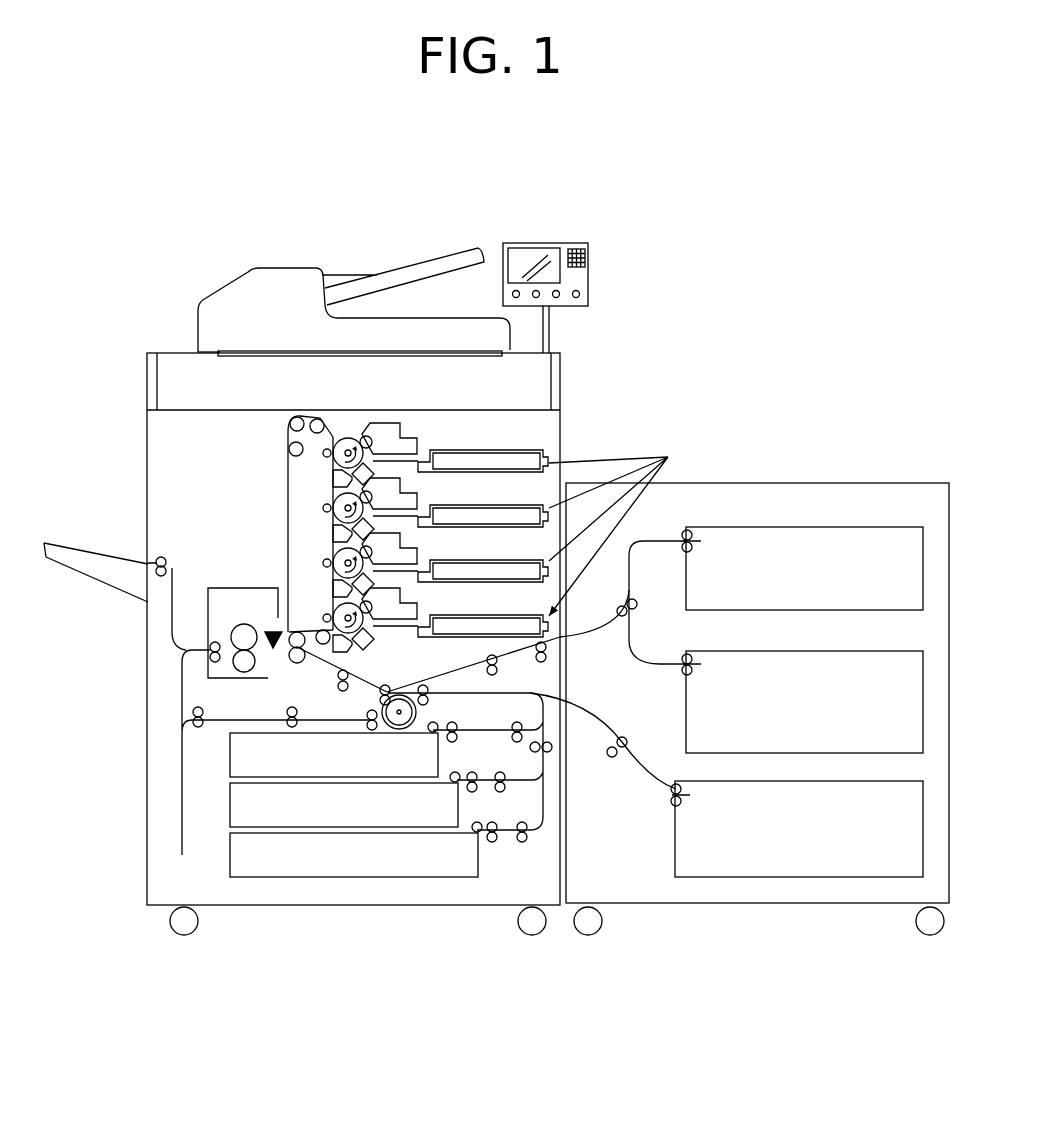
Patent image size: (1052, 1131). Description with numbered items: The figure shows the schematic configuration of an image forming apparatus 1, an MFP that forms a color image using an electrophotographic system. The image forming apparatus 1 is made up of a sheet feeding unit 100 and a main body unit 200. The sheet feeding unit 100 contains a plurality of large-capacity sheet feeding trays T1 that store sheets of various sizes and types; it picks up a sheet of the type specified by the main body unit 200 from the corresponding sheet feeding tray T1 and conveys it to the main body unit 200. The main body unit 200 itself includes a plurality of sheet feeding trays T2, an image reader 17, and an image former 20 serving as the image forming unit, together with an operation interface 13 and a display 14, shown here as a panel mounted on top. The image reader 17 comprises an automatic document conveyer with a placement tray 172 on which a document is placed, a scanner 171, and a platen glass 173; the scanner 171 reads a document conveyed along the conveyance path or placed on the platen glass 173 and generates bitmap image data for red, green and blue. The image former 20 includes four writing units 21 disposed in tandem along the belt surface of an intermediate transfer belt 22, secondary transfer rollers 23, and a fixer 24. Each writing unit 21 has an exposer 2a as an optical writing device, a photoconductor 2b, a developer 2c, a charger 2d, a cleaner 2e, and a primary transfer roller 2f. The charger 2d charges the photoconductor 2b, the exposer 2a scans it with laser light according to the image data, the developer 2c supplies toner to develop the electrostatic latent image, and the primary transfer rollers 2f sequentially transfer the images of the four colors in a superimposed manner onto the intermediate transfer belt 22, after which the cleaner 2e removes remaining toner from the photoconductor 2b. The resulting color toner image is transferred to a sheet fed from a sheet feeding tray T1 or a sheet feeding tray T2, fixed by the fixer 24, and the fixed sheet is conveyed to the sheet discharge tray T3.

The image forming apparatus 1 is at (702, 176).
The operation interface 13 is at (578, 275).
The display 14 is at (530, 252).
The image reader 17 is at (319, 291).
The scanner 171 is at (548, 386).
The placement tray 172 is at (345, 275).
The platen glass 173 is at (380, 355).
The image former 20 is at (437, 544).
The writing units 21 is at (630, 528).
The exposer 2a is at (470, 450).
The photoconductor 2b is at (340, 438).
The developer 2c is at (407, 437).
The charger 2d is at (370, 466).
The cleaner 2e is at (332, 480).
The primary transfer roller 2f is at (324, 456).
The intermediate transfer belt 22 is at (287, 470).
The secondary transfer rollers 23 is at (296, 658).
The fixer 24 is at (215, 588).
The sheet feeding tray T1 is at (841, 527).
The sheet feeding tray T2 is at (333, 860).
The sheet discharge tray T3 is at (88, 572).
The sheet feeding unit 100 is at (739, 734).
The main body unit 200 is at (420, 907).